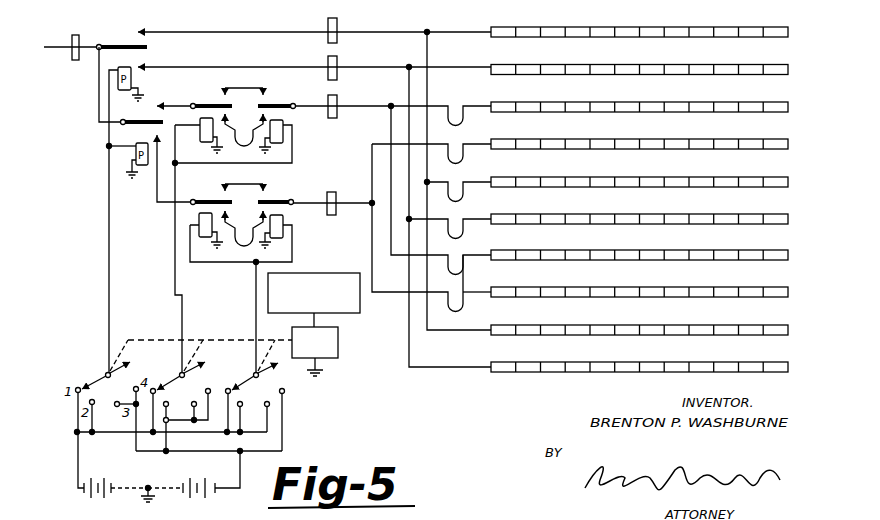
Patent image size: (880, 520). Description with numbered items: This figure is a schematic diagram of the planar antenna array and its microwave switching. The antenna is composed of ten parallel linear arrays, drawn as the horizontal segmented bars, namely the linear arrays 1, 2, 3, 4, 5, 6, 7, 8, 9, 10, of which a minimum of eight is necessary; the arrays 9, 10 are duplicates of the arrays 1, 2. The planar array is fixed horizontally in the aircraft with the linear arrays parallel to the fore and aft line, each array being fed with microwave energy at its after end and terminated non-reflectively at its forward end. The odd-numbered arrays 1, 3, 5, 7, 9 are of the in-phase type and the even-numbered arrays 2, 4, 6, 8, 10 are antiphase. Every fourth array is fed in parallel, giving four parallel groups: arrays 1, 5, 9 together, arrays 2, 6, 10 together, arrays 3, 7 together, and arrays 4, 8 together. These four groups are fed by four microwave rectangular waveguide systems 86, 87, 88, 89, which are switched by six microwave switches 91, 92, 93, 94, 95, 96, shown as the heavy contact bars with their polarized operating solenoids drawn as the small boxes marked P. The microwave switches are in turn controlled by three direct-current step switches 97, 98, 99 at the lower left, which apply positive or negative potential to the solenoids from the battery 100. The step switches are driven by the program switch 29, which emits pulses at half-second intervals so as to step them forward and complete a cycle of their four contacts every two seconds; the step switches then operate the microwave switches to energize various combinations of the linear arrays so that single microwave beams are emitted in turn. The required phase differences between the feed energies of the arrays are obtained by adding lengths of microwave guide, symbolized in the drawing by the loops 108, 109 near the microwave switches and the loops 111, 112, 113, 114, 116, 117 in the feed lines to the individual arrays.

The linear array 1 is at (788, 32).
The linear array 2 is at (788, 70).
The linear array 3 is at (788, 107).
The linear array 4 is at (788, 144).
The linear array 5 is at (788, 182).
The linear array 6 is at (788, 219).
The linear array 7 is at (788, 255).
The linear array 8 is at (788, 292).
The linear array 9 is at (788, 330).
The linear array 10 is at (788, 367).
The program switch 29 is at (337, 273).
The microwave rectangular waveguide system 86 is at (262, 33).
The microwave rectangular waveguide system 87 is at (274, 65).
The microwave rectangular waveguide system 88 is at (322, 104).
The microwave rectangular waveguide system 89 is at (316, 194).
The microwave switch 91 is at (121, 37).
The microwave switch 92 is at (139, 115).
The microwave switch 93 is at (208, 99).
The microwave switch 94 is at (292, 99).
The microwave switch 95 is at (208, 190).
The microwave switch 96 is at (292, 190).
The direct-current step switch 97 is at (89, 360).
The direct-current step switch 98 is at (171, 360).
The direct-current step switch 99 is at (246, 360).
The battery 100 is at (148, 487).
The loop 108 is at (243, 145).
The loop 109 is at (243, 245).
The loop 111 is at (463, 122).
The loop 112 is at (463, 160).
The loop 113 is at (463, 198).
The loop 114 is at (463, 235).
The loop 116 is at (463, 271).
The loop 117 is at (463, 308).